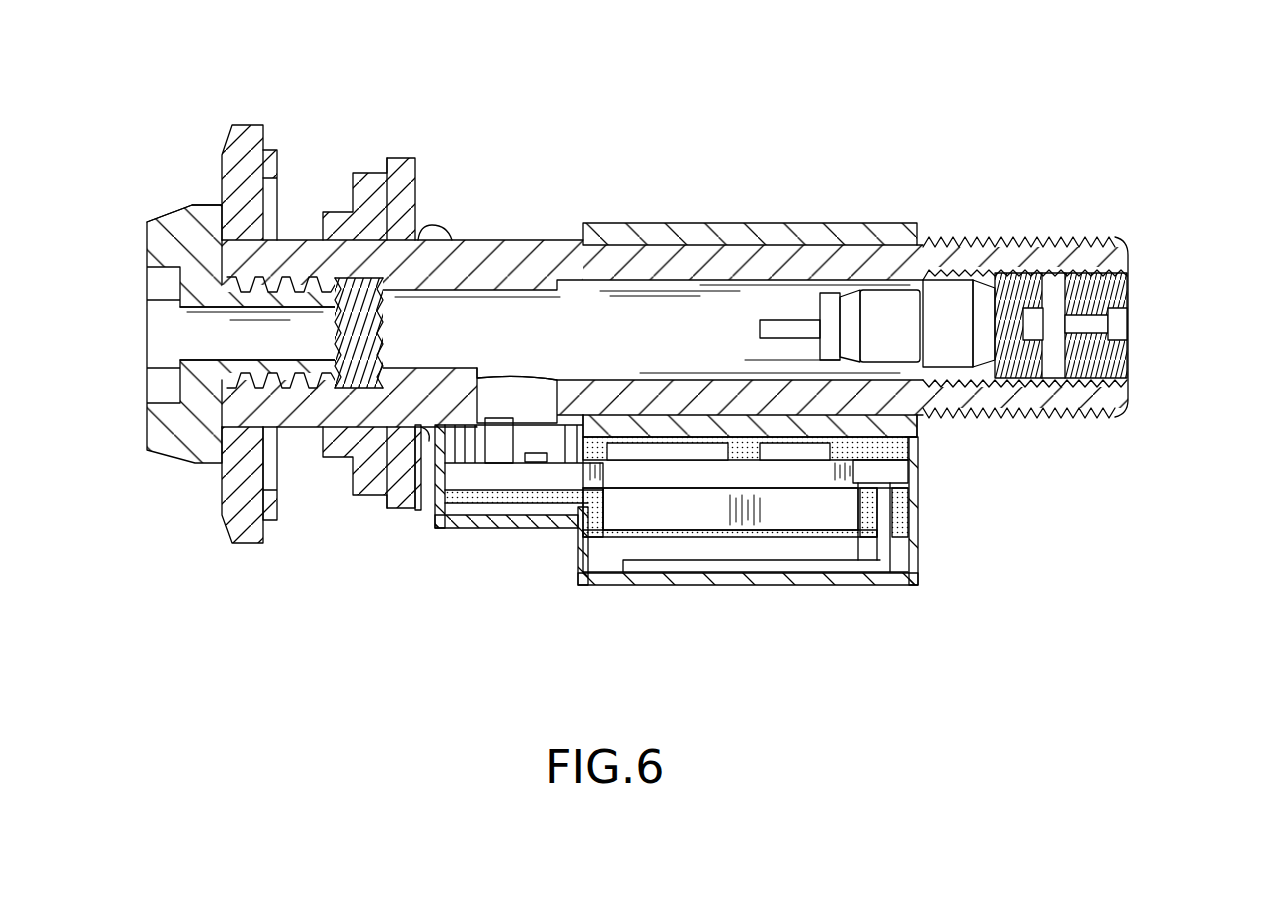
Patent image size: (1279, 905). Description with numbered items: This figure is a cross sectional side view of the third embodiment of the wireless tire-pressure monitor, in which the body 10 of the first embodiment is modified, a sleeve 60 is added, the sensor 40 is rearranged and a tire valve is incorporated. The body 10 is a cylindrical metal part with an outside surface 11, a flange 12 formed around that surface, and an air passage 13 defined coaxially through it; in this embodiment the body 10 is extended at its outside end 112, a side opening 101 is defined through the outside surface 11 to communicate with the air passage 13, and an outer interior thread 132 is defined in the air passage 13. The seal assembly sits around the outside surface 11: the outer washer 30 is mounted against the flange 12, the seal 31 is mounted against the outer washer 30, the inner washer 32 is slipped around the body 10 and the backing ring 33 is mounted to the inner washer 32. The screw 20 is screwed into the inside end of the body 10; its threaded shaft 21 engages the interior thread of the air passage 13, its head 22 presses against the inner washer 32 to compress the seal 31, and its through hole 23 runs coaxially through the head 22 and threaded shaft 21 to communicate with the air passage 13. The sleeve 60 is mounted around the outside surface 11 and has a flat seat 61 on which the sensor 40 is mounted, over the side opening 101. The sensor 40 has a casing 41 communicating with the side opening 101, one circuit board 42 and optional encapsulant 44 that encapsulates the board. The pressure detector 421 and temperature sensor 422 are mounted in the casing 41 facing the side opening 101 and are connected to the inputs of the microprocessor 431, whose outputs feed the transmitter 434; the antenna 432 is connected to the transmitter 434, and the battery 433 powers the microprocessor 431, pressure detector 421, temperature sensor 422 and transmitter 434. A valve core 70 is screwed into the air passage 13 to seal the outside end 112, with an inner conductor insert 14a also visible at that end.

The body 10 is at (724, 258).
The outside surface 11 is at (550, 238).
The flange 12 is at (430, 232).
The air passage 13 is at (420, 362).
The inner conductor insert 14a is at (1045, 270).
The screw 20 is at (193, 295).
The threaded shaft 21 is at (302, 372).
The head 22 is at (147, 237).
The through hole 23 is at (195, 360).
The outer washer 30 is at (369, 282).
The seal 31 is at (402, 158).
The inner washer 32 is at (247, 125).
The backing ring 33 is at (267, 150).
The sensor 40 is at (772, 532).
The casing 41 is at (913, 542).
The circuit board 42 is at (819, 550).
The encapsulant 44 is at (902, 500).
The sleeve 60 is at (793, 314).
The flat seat 61 is at (900, 435).
The valve core 70 is at (962, 297).
The side opening 101 is at (540, 380).
The outside end 112 is at (1127, 265).
The outer interior thread 132 is at (1108, 380).
The pressure detector 421 is at (500, 455).
The temperature sensor 422 is at (543, 462).
The microprocessor 431 is at (700, 450).
The antenna 432 is at (908, 557).
The battery 433 is at (848, 513).
The transmitter 434 is at (793, 450).